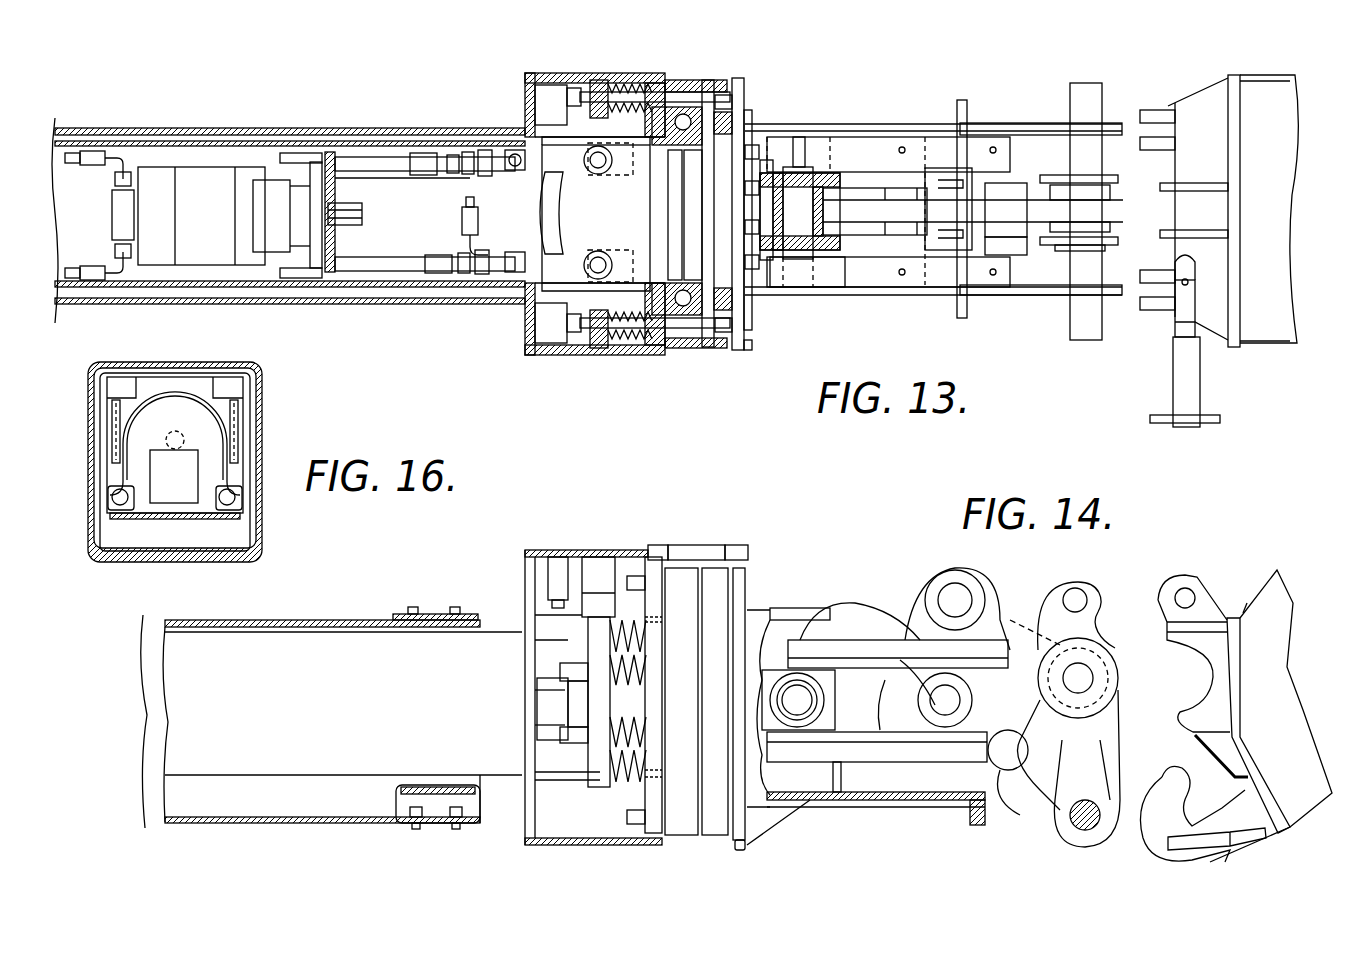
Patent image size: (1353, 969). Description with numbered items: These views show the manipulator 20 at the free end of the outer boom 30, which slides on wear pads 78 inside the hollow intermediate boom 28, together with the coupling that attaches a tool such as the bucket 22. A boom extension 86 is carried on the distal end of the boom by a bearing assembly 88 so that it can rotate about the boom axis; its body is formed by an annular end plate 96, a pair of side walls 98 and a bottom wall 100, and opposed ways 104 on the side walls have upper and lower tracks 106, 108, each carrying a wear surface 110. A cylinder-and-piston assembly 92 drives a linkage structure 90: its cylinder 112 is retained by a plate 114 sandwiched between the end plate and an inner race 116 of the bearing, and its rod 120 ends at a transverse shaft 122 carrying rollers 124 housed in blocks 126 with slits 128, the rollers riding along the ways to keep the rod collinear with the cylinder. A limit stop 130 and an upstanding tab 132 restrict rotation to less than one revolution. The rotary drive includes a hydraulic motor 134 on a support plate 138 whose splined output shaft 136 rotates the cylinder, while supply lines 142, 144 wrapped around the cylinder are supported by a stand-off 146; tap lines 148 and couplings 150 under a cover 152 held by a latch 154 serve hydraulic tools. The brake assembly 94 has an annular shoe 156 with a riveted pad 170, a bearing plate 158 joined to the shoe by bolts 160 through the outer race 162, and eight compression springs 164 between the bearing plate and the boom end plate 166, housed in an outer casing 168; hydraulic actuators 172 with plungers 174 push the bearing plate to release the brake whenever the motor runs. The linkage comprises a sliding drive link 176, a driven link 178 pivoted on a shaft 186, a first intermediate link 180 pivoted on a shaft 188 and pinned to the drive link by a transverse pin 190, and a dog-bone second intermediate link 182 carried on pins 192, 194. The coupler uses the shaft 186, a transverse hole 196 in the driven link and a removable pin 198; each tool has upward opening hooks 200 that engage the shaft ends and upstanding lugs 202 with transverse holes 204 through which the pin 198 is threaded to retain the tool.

In FIG. 13, the manipulator 20 is at (525, 397).
In FIG. 14, the manipulator 20 is at (620, 503).
In FIG. 13, the excavation bucket 22 is at (1290, 337).
In FIG. 14, the excavation bucket 22 is at (1280, 616).
In FIG. 13, the intermediate boom 28 is at (260, 302).
In FIG. 16, the intermediate boom 28 is at (265, 537).
In FIG. 14, the intermediate boom 28 is at (275, 826).
In FIG. 13, the outer boom 30 is at (180, 133).
In FIG. 16, the outer boom 30 is at (250, 381).
In FIG. 14, the outer boom 30 is at (273, 653).
In FIG. 14, the wear pads 78 is at (420, 780).
In FIG. 13, the boom extension 86 is at (930, 118).
In FIG. 14, the boom extension 86 is at (887, 812).
In FIG. 13, the bearing assembly 88 is at (691, 351).
In FIG. 14, the bearing assembly 88 is at (693, 560).
In FIG. 13, the linkage structure 90 is at (918, 277).
In FIG. 14, the linkage structure 90 is at (952, 555).
In FIG. 13, the cylinder-and-piston assembly 92 is at (542, 182).
In FIG. 13, the brake assembly 94 is at (721, 78).
In FIG. 14, the brake assembly 94 is at (736, 563).
In FIG. 13, the annular end plate 96 is at (748, 353).
In FIG. 13, the side walls 98 is at (1032, 122).
In FIG. 14, the side walls 98 is at (774, 625).
In FIG. 14, the bottom wall 100 is at (955, 810).
In FIG. 13, the ways 104 is at (962, 118).
In FIG. 14, the ways 104 is at (1020, 605).
In FIG. 13, the upper tracks 106 is at (898, 138).
In FIG. 14, the upper tracks 106 is at (890, 640).
In FIG. 14, the lower tracks 108 is at (932, 762).
In FIG. 14, the wear surface 110 is at (858, 698).
In FIG. 13, the cylinder 112 is at (597, 225).
In FIG. 13, the plate 114 is at (750, 318).
In FIG. 13, the inner race 116 is at (743, 152).
In FIG. 13, the rod 120 is at (780, 137).
In FIG. 14, the rod 120 is at (750, 620).
In FIG. 13, the transverse shaft 122 is at (803, 271).
In FIG. 14, the transverse shaft 122 is at (797, 728).
In FIG. 13, the rollers 124 is at (778, 285).
In FIG. 14, the rollers 124 is at (812, 655).
In FIG. 13, the block 126 is at (818, 138).
In FIG. 14, the block 126 is at (860, 760).
In FIG. 13, the slits 128 is at (808, 137).
In FIG. 14, the limit stop 130 is at (747, 548).
In FIG. 14, the tab 132 is at (740, 853).
In FIG. 13, the hydraulic motor 134 is at (192, 162).
In FIG. 16, the hydraulic motor 134 is at (155, 470).
In FIG. 13, the output shaft 136 is at (362, 210).
In FIG. 16, the output shaft 136 is at (190, 418).
In FIG. 13, the support plate 138 is at (328, 154).
In FIG. 16, the support plate 138 is at (170, 375).
In FIG. 13, the hydraulic fluid supply line 142 is at (368, 272).
In FIG. 13, the hydraulic fluid supply line 144 is at (390, 156).
In FIG. 13, the stand-off 146 is at (480, 228).
In FIG. 16, the stand-off 146 is at (225, 503).
In FIG. 13, the tap lines 148 is at (525, 147).
In FIG. 13, the couplings 150 is at (603, 252).
In FIG. 14, the couplings 150 is at (598, 570).
In FIG. 14, the cover 152 is at (550, 550).
In FIG. 14, the latch 154 is at (530, 586).
In FIG. 13, the annular shoe 156 is at (660, 85).
In FIG. 14, the annular shoe 156 is at (702, 830).
In FIG. 13, the bearing plate 158 is at (590, 78).
In FIG. 14, the bearing plate 158 is at (585, 765).
In FIG. 13, the bolts 160 is at (723, 348).
In FIG. 14, the bolts 160 is at (560, 652).
In FIG. 13, the outer race 162 is at (670, 342).
In FIG. 14, the outer race 162 is at (650, 552).
In FIG. 13, the compression springs 164 is at (617, 80).
In FIG. 14, the compression springs 164 is at (627, 773).
In FIG. 13, the end plate 166 is at (660, 352).
In FIG. 14, the end plate 166 is at (657, 832).
In FIG. 13, the outer casing 168 is at (550, 352).
In FIG. 14, the outer casing 168 is at (607, 840).
In FIG. 13, the annular pad 170 is at (737, 110).
In FIG. 13, the hydraulic actuator 172 is at (525, 98).
In FIG. 14, the hydraulic actuator 172 is at (537, 730).
In FIG. 14, the plunger 174 is at (537, 705).
In FIG. 13, the drive link 176 is at (855, 178).
In FIG. 14, the drive link 176 is at (857, 595).
In FIG. 13, the driven link 178 is at (1120, 220).
In FIG. 14, the driven link 178 is at (1110, 735).
In FIG. 13, the first intermediate link 180 is at (1000, 190).
In FIG. 14, the first intermediate link 180 is at (1037, 740).
In FIG. 13, the second intermediate link 182 is at (1102, 195).
In FIG. 14, the second intermediate link 182 is at (1005, 598).
In FIG. 13, the shaft 186 is at (1090, 328).
In FIG. 14, the shaft 186 is at (1075, 830).
In FIG. 13, the shaft 188 is at (1010, 247).
In FIG. 14, the shaft 188 is at (1010, 780).
In FIG. 14, the transverse pin 190 is at (950, 701).
In FIG. 13, the pin 192 is at (967, 173).
In FIG. 14, the pin 192 is at (950, 565).
In FIG. 13, the pin 194 is at (1090, 240).
In FIG. 14, the pin 194 is at (1090, 680).
In FIG. 14, the transverse hole 196 is at (1085, 598).
In FIG. 13, the pin 198 is at (1195, 363).
In FIG. 13, the hooks 200 is at (1150, 110).
In FIG. 14, the hooks 200 is at (1207, 848).
In FIG. 13, the lugs 202 is at (1210, 228).
In FIG. 14, the lugs 202 is at (1207, 592).
In FIG. 14, the transverse holes 204 is at (1185, 588).